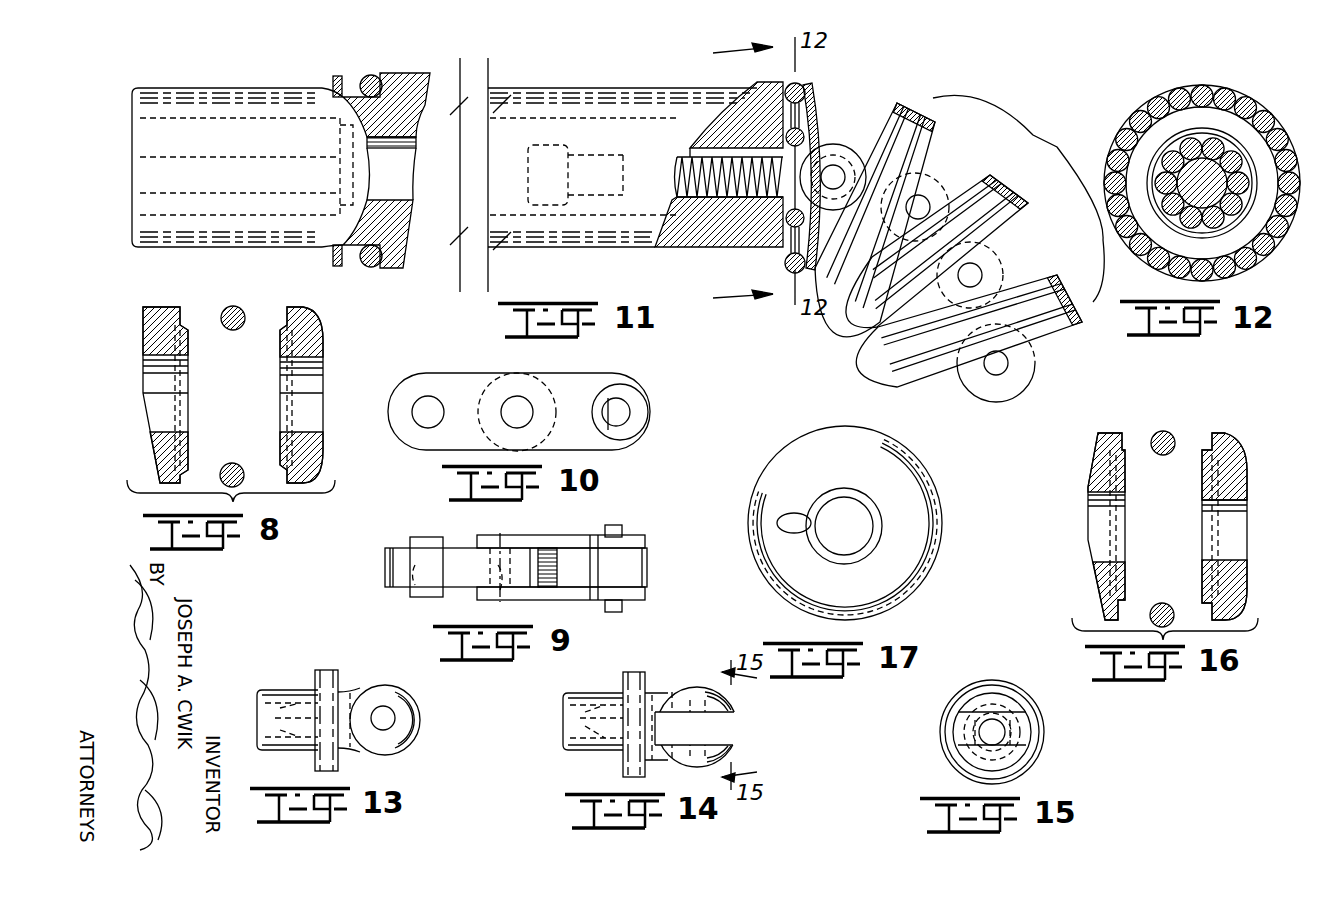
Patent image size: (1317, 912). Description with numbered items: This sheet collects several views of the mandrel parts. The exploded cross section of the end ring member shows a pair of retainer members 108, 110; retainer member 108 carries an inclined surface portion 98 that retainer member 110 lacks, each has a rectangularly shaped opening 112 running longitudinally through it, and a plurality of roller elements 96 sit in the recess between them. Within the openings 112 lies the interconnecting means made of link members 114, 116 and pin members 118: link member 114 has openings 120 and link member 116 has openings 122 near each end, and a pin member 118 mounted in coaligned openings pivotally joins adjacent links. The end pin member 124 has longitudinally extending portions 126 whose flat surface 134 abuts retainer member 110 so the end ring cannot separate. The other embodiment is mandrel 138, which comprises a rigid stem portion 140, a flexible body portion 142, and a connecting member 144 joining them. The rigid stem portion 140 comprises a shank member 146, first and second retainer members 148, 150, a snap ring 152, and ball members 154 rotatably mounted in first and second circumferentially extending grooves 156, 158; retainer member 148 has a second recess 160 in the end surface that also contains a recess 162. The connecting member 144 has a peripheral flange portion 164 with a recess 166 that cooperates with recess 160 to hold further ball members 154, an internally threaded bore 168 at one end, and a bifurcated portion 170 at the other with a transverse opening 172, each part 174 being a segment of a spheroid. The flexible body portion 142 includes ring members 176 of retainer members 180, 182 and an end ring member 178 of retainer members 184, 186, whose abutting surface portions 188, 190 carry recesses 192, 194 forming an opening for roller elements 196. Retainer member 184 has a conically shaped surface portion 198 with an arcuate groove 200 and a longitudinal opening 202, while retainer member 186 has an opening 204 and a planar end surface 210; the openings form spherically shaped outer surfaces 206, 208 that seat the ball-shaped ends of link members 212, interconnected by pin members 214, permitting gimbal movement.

In FIG. 8, the roller elements 96 is at (232, 306).
In FIG. 8, the inclined surface portion 98 is at (150, 452).
In FIG. 8, the retainer member 108 is at (146, 310).
In FIG. 8, the retainer member 110 is at (325, 333).
In FIG. 8, the rectangularly shaped opening 112 is at (147, 388).
In FIG. 10, the link member 114 is at (477, 373).
In FIG. 9, the link member 114 is at (388, 552).
In FIG. 10, the link member 116 is at (590, 373).
In FIG. 9, the link member 116 is at (556, 535).
In FIG. 10, the pin member 118 is at (428, 396).
In FIG. 9, the pin member 118 is at (426, 537).
In FIG. 10, the opening 120 is at (425, 432).
In FIG. 9, the opening 120 is at (412, 585).
In FIG. 10, the opening 122 is at (630, 408).
In FIG. 9, the opening 122 is at (500, 548).
In FIG. 9, the end pin member 124 is at (625, 580).
In FIG. 10, the longitudinally extending portions 126 is at (635, 420).
In FIG. 9, the longitudinally extending portions 126 is at (622, 530).
In FIG. 10, the flat surface 134 is at (628, 385).
In FIG. 9, the flat surface 134 is at (612, 525).
In FIG. 11, the mandrel 138 is at (605, 78).
In FIG. 11, the rigid stem portion 140 is at (515, 88).
In FIG. 11, the flexible body portion 142 is at (1018, 198).
In FIG. 11, the connecting member 144 is at (822, 148).
In FIG. 12, the connecting member 144 is at (1220, 232).
In FIG. 13, the connecting member 144 is at (350, 690).
In FIG. 14, the connecting member 144 is at (650, 690).
In FIG. 15, the connecting member 144 is at (1012, 682).
In FIG. 11, the shank member 146 is at (572, 250).
In FIG. 12, the shank member 146 is at (1190, 90).
In FIG. 11, the first retainer member 148 is at (802, 96).
In FIG. 11, the second retainer member 150 is at (352, 73).
In FIG. 11, the retaining ring or snap ring 152 is at (333, 86).
In FIG. 11, the ball members 154 is at (374, 75).
In FIG. 12, the ball members 154 is at (1205, 95).
In FIG. 11, the first circumferentially extending groove 156 is at (803, 268).
In FIG. 11, the second circumferentially extending groove 158 is at (355, 282).
In FIG. 11, the second recess 160 is at (805, 148).
In FIG. 11, the recess 162 is at (812, 84).
In FIG. 13, the flange portion 164 is at (318, 670).
In FIG. 14, the flange portion 164 is at (623, 772).
In FIG. 15, the flange portion 164 is at (1045, 722).
In FIG. 13, the recess 166 is at (335, 690).
In FIG. 14, the recess 166 is at (645, 690).
In FIG. 15, the recess 166 is at (1040, 740).
In FIG. 13, the internally threaded bore 168 is at (258, 718).
In FIG. 14, the internally threaded bore 168 is at (565, 716).
In FIG. 13, the bifurcated portion 170 is at (422, 716).
In FIG. 14, the bifurcated portion 170 is at (720, 730).
In FIG. 15, the bifurcated portion 170 is at (962, 742).
In FIG. 13, the opening 172 is at (392, 714).
In FIG. 14, the opening 172 is at (672, 692).
In FIG. 15, the opening 172 is at (1010, 702).
In FIG. 13, the part of bifurcated portion 174 is at (418, 740).
In FIG. 14, the part of bifurcated portion 174 is at (722, 704).
In FIG. 15, the part of bifurcated portion 174 is at (960, 712).
In FIG. 11, the ring members 176 is at (910, 90).
In FIG. 11, the ring member 178 is at (1078, 340).
In FIG. 11, the retainer member 180 is at (900, 106).
In FIG. 11, the retainer member 182 is at (935, 120).
In FIG. 11, the retainer member 184 is at (1060, 280).
In FIG. 17, the retainer member 184 is at (915, 458).
In FIG. 16, the retainer member 184 is at (1107, 433).
In FIG. 11, the retainer member 186 is at (905, 386).
In FIG. 16, the retainer member 186 is at (1240, 443).
In FIG. 16, the surface portion 188 is at (1127, 490).
In FIG. 16, the surface portion 190 is at (1205, 500).
In FIG. 16, the recess 192 is at (1122, 447).
In FIG. 16, the recess 194 is at (1210, 440).
In FIG. 11, the roller elements 196 is at (932, 110).
In FIG. 16, the roller elements 196 is at (1170, 431).
In FIG. 17, the conically shaped surface portion 198 is at (915, 510).
In FIG. 16, the conically shaped surface portion 198 is at (1095, 460).
In FIG. 17, the groove 200 is at (792, 517).
In FIG. 16, the groove 200 is at (1088, 532).
In FIG. 17, the opening 202 is at (833, 540).
In FIG. 16, the opening 202 is at (1120, 547).
In FIG. 16, the opening 204 is at (1236, 540).
In FIG. 17, the outer surface 206 is at (838, 490).
In FIG. 16, the outer surface 206 is at (1095, 500).
In FIG. 16, the outer surface 208 is at (1240, 498).
In FIG. 16, the end surface 210 is at (1247, 592).
In FIG. 11, the link member 212 is at (905, 180).
In FIG. 11, the pin members 214 is at (926, 200).